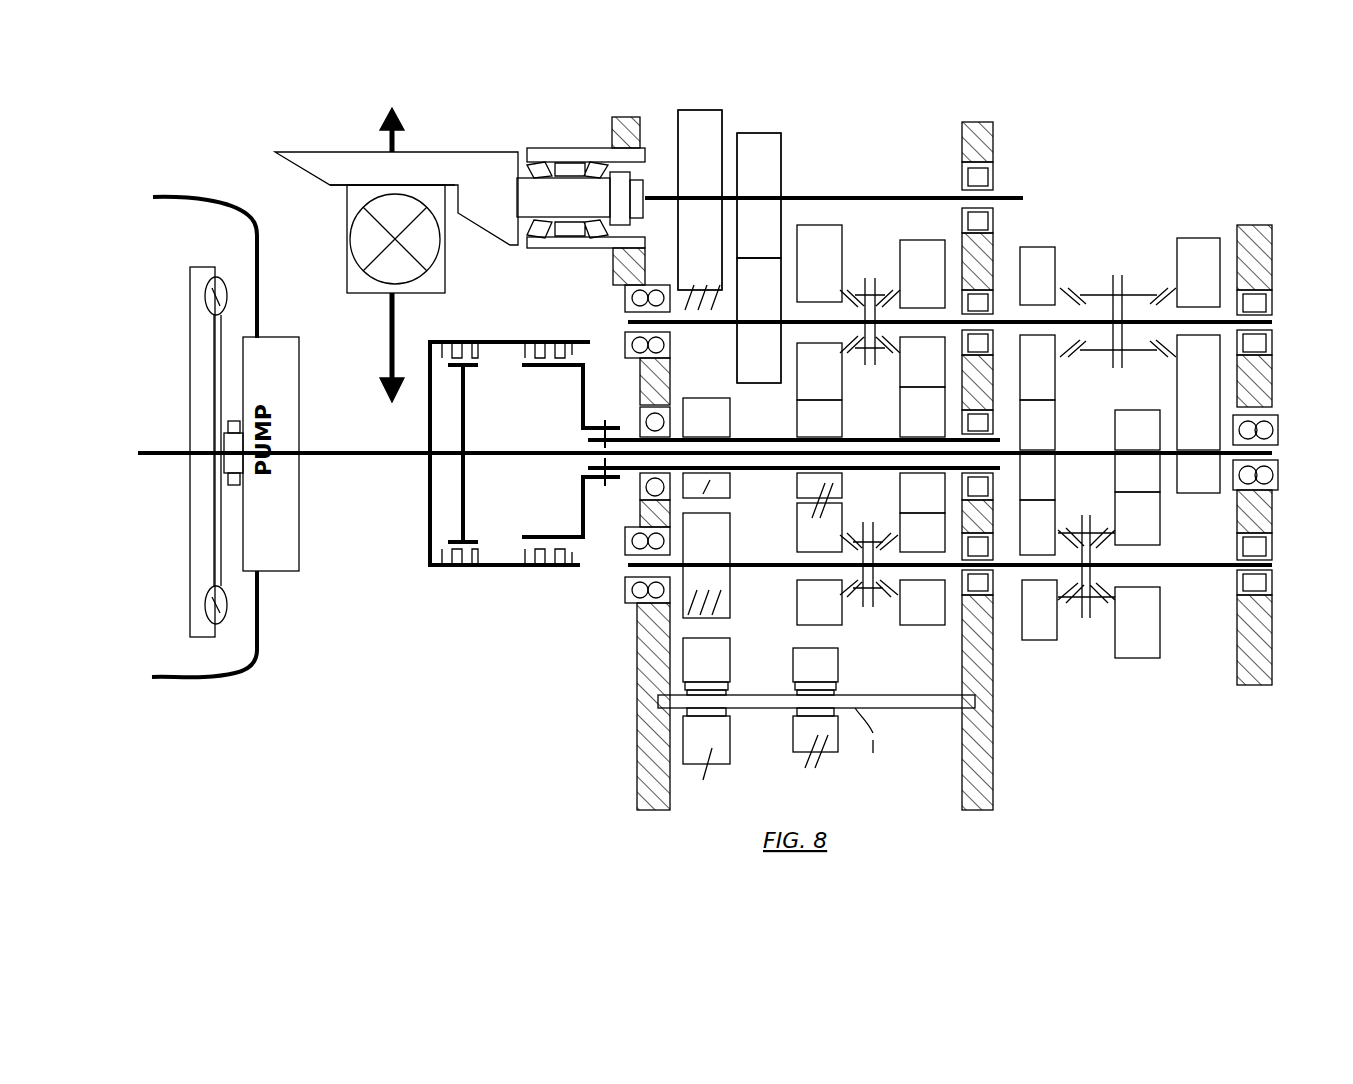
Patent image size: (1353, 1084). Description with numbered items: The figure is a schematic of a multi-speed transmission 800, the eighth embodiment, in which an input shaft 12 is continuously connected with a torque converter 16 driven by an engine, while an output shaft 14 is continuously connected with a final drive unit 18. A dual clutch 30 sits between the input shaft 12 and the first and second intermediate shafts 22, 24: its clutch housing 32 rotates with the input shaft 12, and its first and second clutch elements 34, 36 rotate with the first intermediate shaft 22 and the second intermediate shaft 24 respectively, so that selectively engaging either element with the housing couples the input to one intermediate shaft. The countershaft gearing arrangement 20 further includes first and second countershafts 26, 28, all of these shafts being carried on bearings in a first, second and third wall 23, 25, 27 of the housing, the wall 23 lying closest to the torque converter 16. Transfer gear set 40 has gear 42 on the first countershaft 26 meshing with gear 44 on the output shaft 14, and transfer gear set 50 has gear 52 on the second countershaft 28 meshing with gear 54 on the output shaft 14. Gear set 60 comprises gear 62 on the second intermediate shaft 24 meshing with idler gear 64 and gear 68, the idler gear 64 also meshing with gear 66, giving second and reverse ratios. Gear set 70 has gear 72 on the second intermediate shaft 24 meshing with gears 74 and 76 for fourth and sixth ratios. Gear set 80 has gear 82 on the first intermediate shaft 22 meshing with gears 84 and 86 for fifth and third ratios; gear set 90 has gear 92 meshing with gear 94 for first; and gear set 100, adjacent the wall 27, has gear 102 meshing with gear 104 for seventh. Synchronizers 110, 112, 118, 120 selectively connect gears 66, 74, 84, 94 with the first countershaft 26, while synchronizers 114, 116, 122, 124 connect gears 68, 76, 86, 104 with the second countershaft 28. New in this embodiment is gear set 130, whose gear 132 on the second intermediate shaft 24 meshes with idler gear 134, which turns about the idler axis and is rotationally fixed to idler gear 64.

The multi-speed transmission 800 is at (236, 160).
The final drive unit 18 is at (482, 120).
The torque converter 16 is at (190, 553).
The input shaft 12 is at (343, 457).
The output shaft 14 is at (662, 190).
The dual clutch 30 is at (484, 491).
The clutch housing 32 is at (493, 570).
The first clutch element 34 is at (465, 515).
The second clutch element 36 is at (565, 370).
The first intermediate shaft 22 is at (573, 457).
The second intermediate shaft 24 is at (628, 430).
The first countershaft 26 is at (778, 562).
The second countershaft 28 is at (1133, 318).
The countershaft gearing arrangement 20 is at (1062, 185).
The first wall 23 is at (637, 642).
The second wall 25 is at (993, 748).
The third wall 27 is at (1252, 688).
The transfer gear set 40 is at (732, 100).
The gear 42 is at (706, 539).
The gear 44 is at (700, 200).
The transfer gear set 50 is at (770, 122).
The gear 52 is at (759, 320).
The gear 54 is at (759, 195).
The gear set 60 is at (818, 215).
The gear 62 is at (819, 418).
The idler gear 64 is at (815, 708).
The gear 66 is at (819, 527).
The gear 68 is at (819, 263).
The gear set 70 is at (923, 632).
The gear 72 is at (922, 412).
The gear 74 is at (922, 532).
The gear 76 is at (922, 274).
The gear set 80 is at (1040, 242).
The gear 82 is at (1037, 425).
The gear 84 is at (1039, 610).
The gear 86 is at (1037, 276).
The gear set 90 is at (1138, 670).
The gear 92 is at (1137, 430).
The gear 94 is at (1137, 622).
The gear set 100 is at (1202, 234).
The gear 102 is at (1198, 473).
The gear 104 is at (1198, 272).
The synchronizer 110 is at (855, 595).
The synchronizer 112 is at (882, 532).
The synchronizer 114 is at (853, 354).
The synchronizer 116 is at (888, 290).
The synchronizer 118 is at (1073, 602).
The synchronizer 120 is at (1098, 530).
The synchronizer 122 is at (1078, 353).
The synchronizer 124 is at (1097, 292).
The gear set 130 is at (716, 774).
The gear 132 is at (706, 417).
The idler gear 134 is at (706, 660).